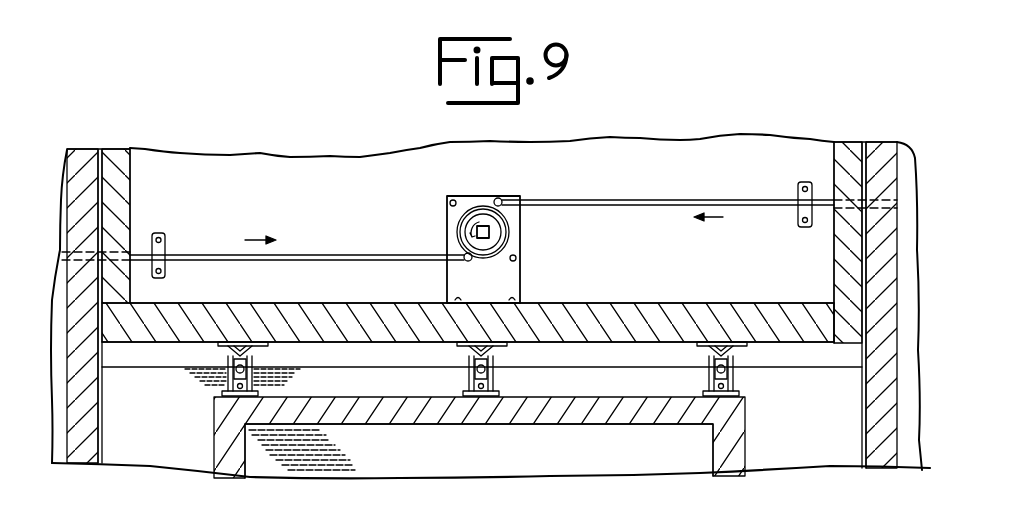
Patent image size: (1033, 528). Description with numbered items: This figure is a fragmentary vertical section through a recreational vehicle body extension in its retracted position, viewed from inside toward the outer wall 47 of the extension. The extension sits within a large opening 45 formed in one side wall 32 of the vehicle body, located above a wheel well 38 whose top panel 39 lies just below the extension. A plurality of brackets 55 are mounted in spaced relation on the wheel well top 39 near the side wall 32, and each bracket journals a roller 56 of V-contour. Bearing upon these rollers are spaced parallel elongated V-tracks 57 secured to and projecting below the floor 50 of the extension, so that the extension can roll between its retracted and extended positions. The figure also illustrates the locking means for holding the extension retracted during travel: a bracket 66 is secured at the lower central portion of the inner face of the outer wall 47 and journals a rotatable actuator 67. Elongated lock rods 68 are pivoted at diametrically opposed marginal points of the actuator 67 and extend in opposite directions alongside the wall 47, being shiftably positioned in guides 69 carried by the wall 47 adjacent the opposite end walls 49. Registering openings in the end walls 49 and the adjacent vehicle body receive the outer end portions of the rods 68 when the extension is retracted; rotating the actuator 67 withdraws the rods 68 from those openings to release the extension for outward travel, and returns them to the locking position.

The side wall 32 is at (124, 455).
The wheel well 38 is at (736, 445).
The top panel of wheel well 39 is at (607, 418).
The opening 45 is at (818, 368).
The outer wall 47 is at (696, 153).
The end walls 49 is at (122, 180).
The floor 50 is at (612, 314).
The brackets 55 is at (222, 389).
The rollers 56 is at (258, 378).
The V-tracks 57 is at (240, 343).
The bracket 66 is at (517, 276).
The rotatable actuator 67 is at (500, 230).
The lock rods 68 is at (375, 256).
The guides 69 is at (166, 243).